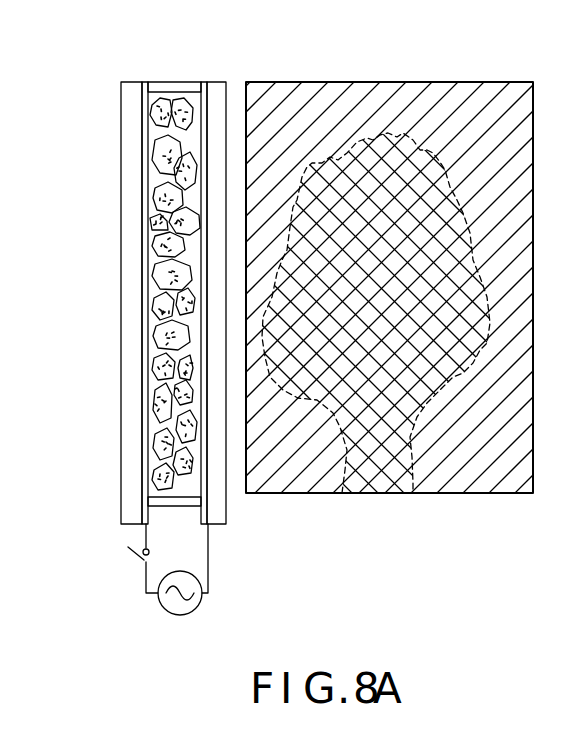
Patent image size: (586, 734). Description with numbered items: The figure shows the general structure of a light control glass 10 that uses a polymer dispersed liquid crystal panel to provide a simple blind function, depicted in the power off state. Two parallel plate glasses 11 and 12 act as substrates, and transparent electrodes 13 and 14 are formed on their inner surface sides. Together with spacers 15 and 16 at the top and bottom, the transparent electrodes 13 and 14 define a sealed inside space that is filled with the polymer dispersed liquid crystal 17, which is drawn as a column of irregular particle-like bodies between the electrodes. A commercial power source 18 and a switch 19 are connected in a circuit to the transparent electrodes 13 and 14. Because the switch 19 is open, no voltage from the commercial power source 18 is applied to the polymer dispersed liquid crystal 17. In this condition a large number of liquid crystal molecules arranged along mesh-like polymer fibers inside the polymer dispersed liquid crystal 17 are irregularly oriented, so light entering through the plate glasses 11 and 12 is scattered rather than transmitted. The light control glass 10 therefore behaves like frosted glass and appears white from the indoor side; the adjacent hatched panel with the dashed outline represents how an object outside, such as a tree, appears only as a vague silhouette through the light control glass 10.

The light control glass 10 is at (488, 82).
The plate glass 11 is at (131, 83).
The plate glass 12 is at (217, 84).
The transparent electrode 13 is at (145, 82).
The transparent electrode 14 is at (205, 82).
The spacer 15 is at (173, 82).
The spacer 16 is at (173, 518).
The polymer dispersed liquid crystal 17 is at (163, 295).
The commercial power source 18 is at (181, 615).
The switch 19 is at (129, 551).